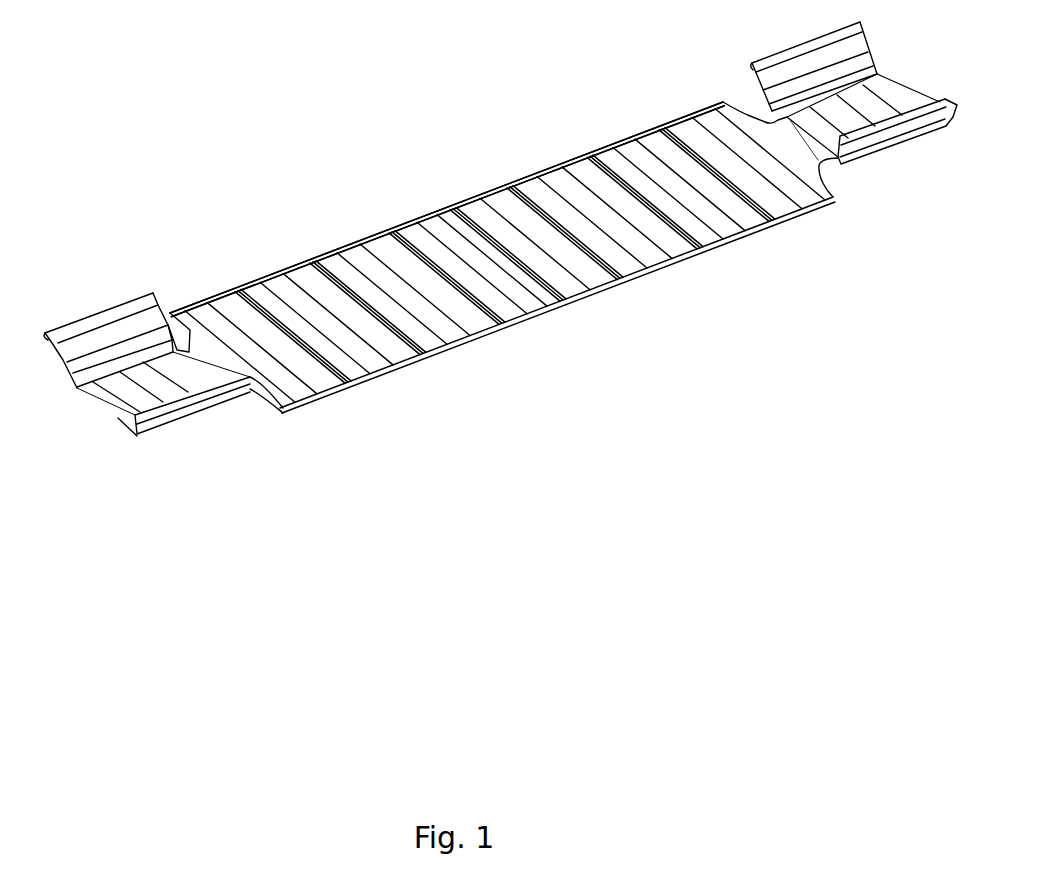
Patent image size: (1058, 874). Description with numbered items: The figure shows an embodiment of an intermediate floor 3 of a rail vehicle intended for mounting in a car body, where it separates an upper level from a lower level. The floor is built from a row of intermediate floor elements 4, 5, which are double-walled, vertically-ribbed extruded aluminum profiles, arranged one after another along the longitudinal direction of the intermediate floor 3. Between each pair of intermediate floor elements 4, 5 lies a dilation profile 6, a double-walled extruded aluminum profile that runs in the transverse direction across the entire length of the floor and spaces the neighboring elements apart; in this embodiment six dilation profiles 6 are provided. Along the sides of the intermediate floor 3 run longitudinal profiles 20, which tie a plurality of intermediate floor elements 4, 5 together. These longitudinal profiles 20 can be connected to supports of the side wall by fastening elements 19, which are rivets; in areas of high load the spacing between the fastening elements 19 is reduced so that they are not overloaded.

The intermediate floor 3 is at (290, 178).
The intermediate floor element 4 is at (527, 187).
The intermediate floor element 5 is at (500, 203).
The dilation profile 6 is at (346, 404).
The fastening element 19 is at (297, 266).
The longitudinal profile 20 is at (250, 282).